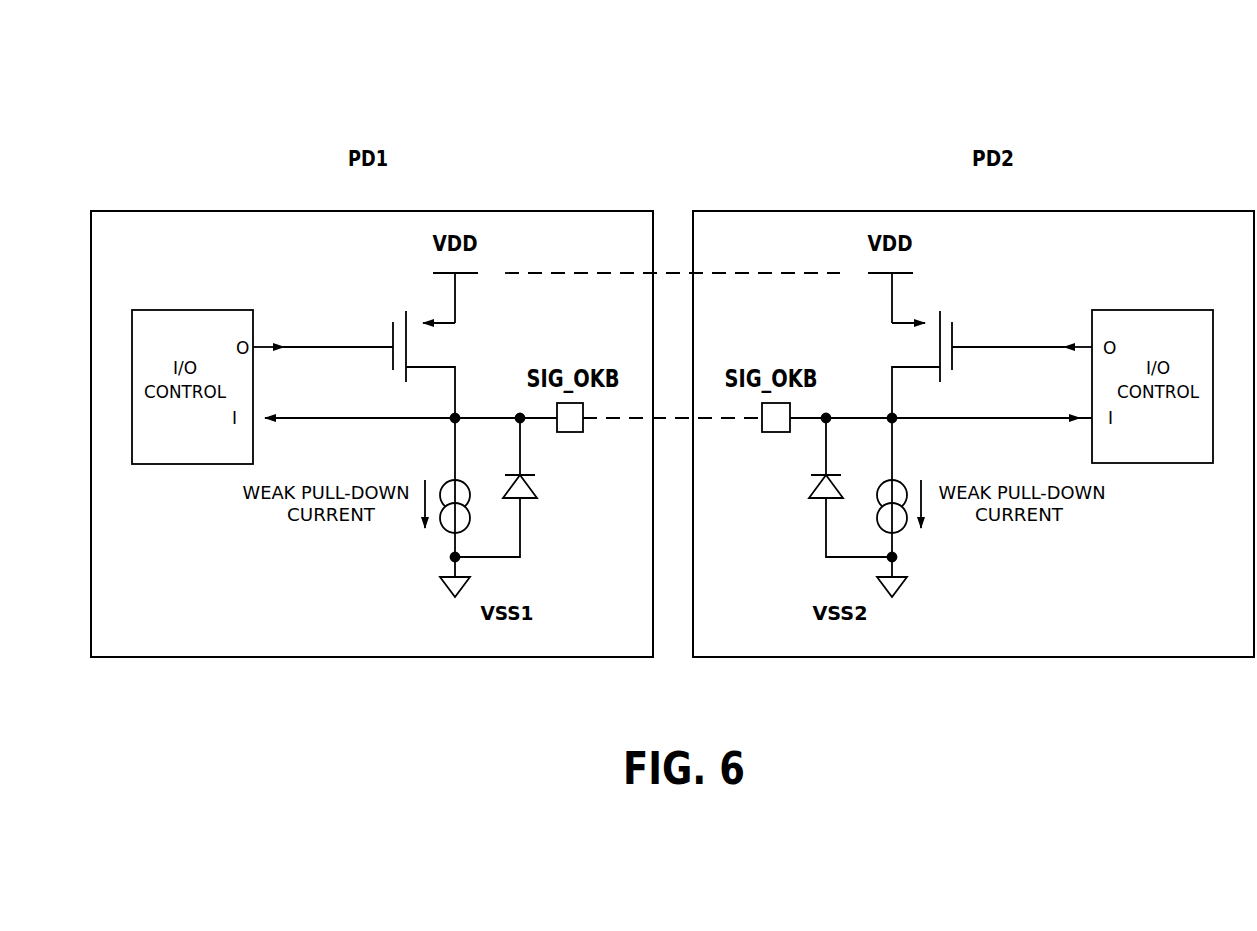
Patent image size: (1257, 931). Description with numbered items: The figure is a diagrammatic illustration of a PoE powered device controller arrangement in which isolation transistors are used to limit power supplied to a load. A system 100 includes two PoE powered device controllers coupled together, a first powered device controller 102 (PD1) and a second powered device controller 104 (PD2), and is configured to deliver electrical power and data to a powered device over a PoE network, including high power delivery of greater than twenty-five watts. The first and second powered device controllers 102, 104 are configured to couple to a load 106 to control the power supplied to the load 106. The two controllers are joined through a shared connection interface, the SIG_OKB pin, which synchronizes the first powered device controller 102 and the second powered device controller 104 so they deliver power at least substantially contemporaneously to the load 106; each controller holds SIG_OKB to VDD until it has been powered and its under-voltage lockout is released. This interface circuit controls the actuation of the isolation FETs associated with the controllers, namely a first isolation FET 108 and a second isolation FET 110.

The system 100 is at (1014, 83).
The first powered device controller 102 is at (204, 207).
The second powered device controller 104 is at (865, 206).
The load 106 is at (908, 538).
The first isolation FET 108 is at (545, 514).
The second isolation FET 110 is at (818, 505).